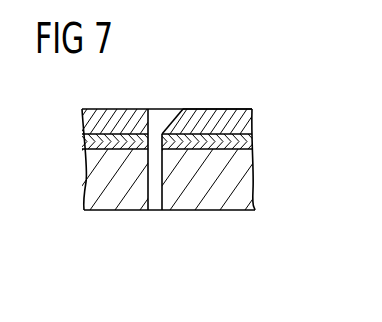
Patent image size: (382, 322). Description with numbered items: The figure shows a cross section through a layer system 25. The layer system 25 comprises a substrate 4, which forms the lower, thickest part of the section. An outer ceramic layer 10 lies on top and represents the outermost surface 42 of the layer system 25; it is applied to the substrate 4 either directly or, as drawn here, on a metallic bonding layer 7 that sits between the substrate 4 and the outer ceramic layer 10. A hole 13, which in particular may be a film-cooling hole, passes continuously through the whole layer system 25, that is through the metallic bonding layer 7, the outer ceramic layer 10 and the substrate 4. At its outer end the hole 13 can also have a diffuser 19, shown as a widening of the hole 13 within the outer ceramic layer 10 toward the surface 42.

The substrate 4 is at (244, 180).
The metallic bonding layer 7 is at (249, 136).
The outer ceramic layer 10 is at (240, 123).
The hole 13 is at (155, 111).
The diffuser 19 is at (169, 111).
The surface 42 is at (203, 109).
The layer system 25 is at (104, 241).